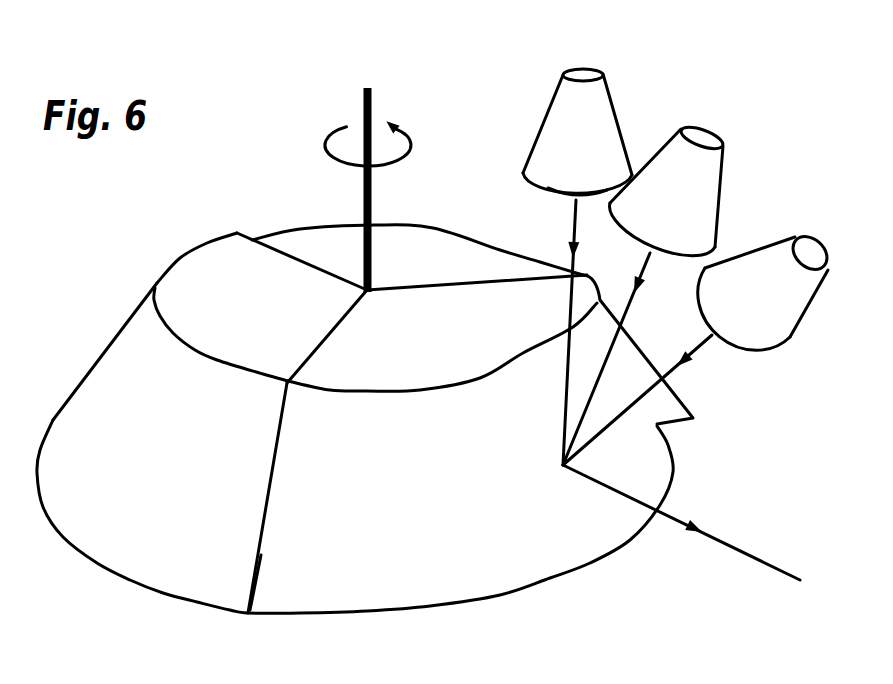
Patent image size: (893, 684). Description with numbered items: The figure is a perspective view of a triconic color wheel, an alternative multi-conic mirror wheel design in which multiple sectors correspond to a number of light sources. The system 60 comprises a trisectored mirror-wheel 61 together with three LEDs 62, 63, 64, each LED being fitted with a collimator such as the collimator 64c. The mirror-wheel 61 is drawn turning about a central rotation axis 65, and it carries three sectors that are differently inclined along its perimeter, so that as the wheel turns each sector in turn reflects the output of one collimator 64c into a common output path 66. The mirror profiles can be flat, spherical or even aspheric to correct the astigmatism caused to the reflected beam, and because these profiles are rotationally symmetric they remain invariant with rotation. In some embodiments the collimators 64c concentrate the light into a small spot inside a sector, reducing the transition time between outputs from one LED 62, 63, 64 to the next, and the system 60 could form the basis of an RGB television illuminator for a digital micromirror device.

The system 60 is at (122, 262).
The trisectored mirror-wheel 61 is at (392, 494).
The LED 62 is at (577, 250).
The LED 63 is at (644, 279).
The LED 64 is at (698, 333).
The collimator 64c is at (808, 342).
The rotation shaft / axis 65 is at (357, 87).
The common output path 66 is at (707, 528).